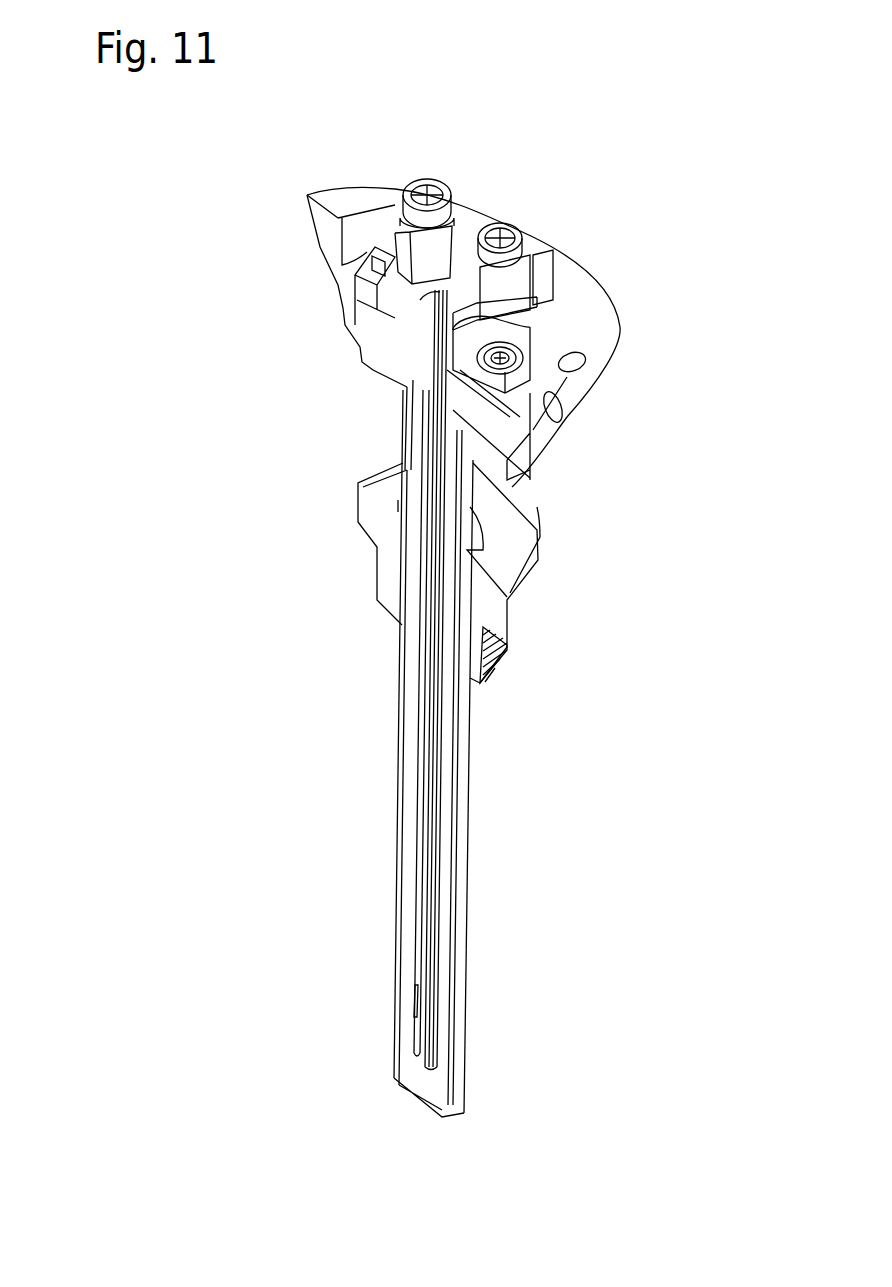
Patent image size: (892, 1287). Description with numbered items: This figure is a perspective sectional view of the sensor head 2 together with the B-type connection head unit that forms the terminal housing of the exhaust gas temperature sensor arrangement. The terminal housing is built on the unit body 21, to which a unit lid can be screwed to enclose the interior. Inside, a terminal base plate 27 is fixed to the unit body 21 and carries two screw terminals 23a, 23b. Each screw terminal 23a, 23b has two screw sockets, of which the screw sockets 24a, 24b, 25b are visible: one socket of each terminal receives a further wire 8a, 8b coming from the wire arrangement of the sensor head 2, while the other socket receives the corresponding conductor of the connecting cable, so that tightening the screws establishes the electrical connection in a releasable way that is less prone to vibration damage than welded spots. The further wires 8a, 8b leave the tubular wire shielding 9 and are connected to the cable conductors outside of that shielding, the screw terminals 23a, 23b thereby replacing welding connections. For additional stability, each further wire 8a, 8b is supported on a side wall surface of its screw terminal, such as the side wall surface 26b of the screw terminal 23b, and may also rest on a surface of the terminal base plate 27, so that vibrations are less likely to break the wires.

The sensor head 2 is at (475, 888).
The further wire 8a is at (423, 370).
The further wire 8b is at (540, 457).
The tubular wire shielding 9 is at (423, 468).
The unit body 21 is at (592, 343).
The screw terminal 23a is at (338, 217).
The screw terminal 23b is at (543, 273).
The screw socket 24a is at (418, 182).
The screw socket 24b is at (500, 222).
The screw socket 25b is at (545, 290).
The side wall surface 26b is at (548, 308).
The terminal base plate 27 is at (378, 303).